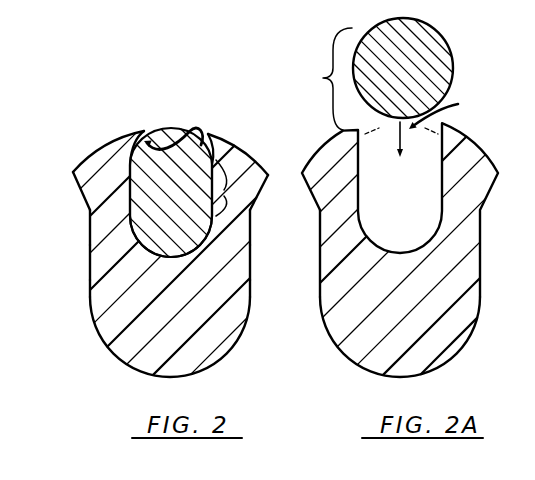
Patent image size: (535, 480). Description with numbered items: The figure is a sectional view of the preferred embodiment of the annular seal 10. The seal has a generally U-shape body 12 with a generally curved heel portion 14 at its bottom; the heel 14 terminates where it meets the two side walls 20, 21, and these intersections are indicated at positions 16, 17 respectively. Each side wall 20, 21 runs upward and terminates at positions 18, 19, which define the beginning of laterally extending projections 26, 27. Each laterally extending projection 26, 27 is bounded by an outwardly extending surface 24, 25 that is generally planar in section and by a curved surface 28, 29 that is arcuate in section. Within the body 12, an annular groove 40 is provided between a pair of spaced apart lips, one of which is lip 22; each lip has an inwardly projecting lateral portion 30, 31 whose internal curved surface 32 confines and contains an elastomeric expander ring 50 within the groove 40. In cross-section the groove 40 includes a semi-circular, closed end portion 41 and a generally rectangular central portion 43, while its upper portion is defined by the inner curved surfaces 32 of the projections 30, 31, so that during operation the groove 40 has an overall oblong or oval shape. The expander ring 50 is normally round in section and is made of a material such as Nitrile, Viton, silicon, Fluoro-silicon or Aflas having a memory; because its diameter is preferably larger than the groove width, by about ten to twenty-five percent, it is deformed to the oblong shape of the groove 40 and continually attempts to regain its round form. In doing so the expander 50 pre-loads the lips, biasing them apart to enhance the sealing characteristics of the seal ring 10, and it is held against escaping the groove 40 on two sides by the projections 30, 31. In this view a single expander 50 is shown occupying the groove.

In FIG. 2, the annular seal 10 is at (160, 64).
In FIG. 2, the U-shape body 12 is at (252, 293).
In FIG. 2A, the U-shape body 12 is at (482, 264).
In FIG. 2, the heel portion 14 is at (180, 379).
In FIG. 2A, the heel portion 14 is at (420, 377).
In FIG. 2, the intersection of heel with side wall 16 is at (84, 320).
In FIG. 2, the intersection of heel with side wall 17 is at (256, 311).
In FIG. 2, the side wall terminal position 18 is at (82, 220).
In FIG. 2, the side wall terminal position 19 is at (256, 216).
In FIG. 2, the side wall 20 is at (88, 293).
In FIG. 2A, the side wall 20 is at (320, 308).
In FIG. 2, the side wall 21 is at (252, 258).
In FIG. 2, the lip 22 is at (100, 258).
In FIG. 2, the outwardly extending surface 24 is at (70, 187).
In FIG. 2, the outwardly extending surface 25 is at (266, 184).
In FIG. 2, the laterally extending projection 26 is at (83, 168).
In FIG. 2A, the laterally extending projection 26 is at (488, 174).
In FIG. 2, the laterally extending projection 27 is at (259, 170).
In FIG. 2, the curved surface 28 is at (106, 142).
In FIG. 2, the curved surface 29 is at (238, 137).
In FIG. 2, the inwardly projecting lateral portion 30 is at (140, 133).
In FIG. 2, the inwardly projecting lateral portion 31 is at (206, 140).
In FIG. 2, the internal curved surface 32 is at (198, 145).
In FIG. 2A, the internal curved surface 32 is at (373, 146).
In FIG. 2, the annular groove 40 is at (167, 120).
In FIG. 2A, the annular groove 40 is at (442, 123).
In FIG. 2, the semi-circular closed end portion 41 is at (171, 264).
In FIG. 2, the rectangular central portion 43 is at (234, 188).
In FIG. 2, the elastomeric expander ring 50 is at (142, 196).
In FIG. 2A, the elastomeric expander ring 50 is at (453, 71).